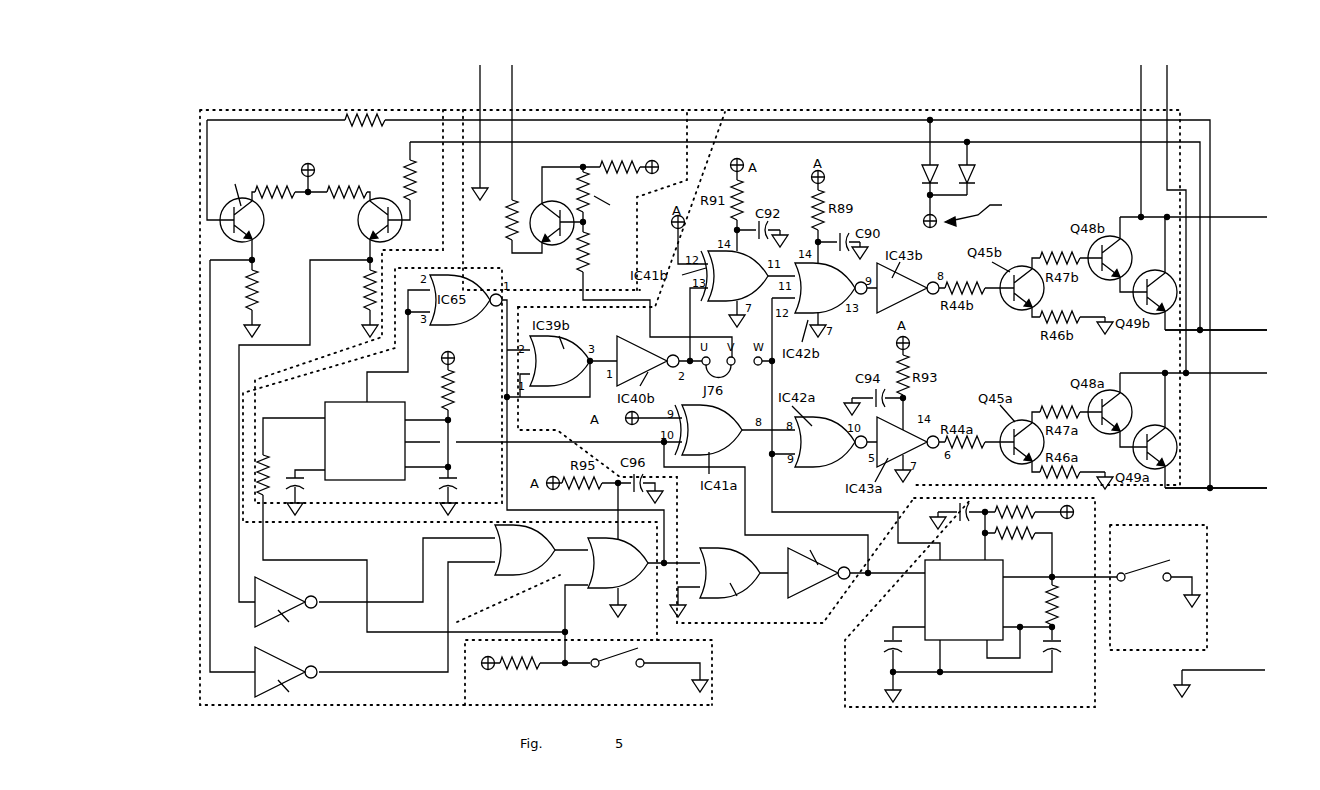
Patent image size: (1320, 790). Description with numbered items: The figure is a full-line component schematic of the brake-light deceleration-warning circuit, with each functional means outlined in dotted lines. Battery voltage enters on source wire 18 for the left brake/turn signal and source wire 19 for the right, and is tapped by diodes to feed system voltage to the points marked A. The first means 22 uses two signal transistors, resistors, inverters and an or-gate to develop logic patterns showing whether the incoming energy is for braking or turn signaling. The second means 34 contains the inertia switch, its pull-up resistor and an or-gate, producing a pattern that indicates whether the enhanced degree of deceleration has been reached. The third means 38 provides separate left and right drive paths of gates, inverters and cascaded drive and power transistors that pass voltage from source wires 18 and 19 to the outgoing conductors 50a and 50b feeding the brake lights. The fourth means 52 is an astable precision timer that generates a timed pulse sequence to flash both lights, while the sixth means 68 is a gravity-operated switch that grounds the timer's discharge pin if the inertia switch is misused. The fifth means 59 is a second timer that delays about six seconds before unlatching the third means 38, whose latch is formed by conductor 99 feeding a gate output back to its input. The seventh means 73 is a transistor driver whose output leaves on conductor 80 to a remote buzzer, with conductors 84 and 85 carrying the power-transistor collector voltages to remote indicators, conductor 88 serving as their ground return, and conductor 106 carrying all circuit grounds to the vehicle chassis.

The first means 22 is at (293, 105).
The seventh means 73 is at (563, 104).
The conductor 88 is at (478, 123).
The conductor 80 is at (509, 123).
The conductor 84 is at (1136, 131).
The conductor 85 is at (1169, 209).
The outgoing conductor 50b is at (1212, 219).
The source wire 19 is at (1229, 332).
The outgoing conductor 50a is at (1211, 375).
The source wire 18 is at (1229, 490).
The conductor 106 is at (1236, 679).
The sixth means 68 is at (1212, 577).
The fourth means 52 is at (878, 706).
The third means 38 is at (816, 632).
The second means 34 is at (716, 696).
The fifth means 59 is at (343, 510).
The conductor 99 is at (558, 400).